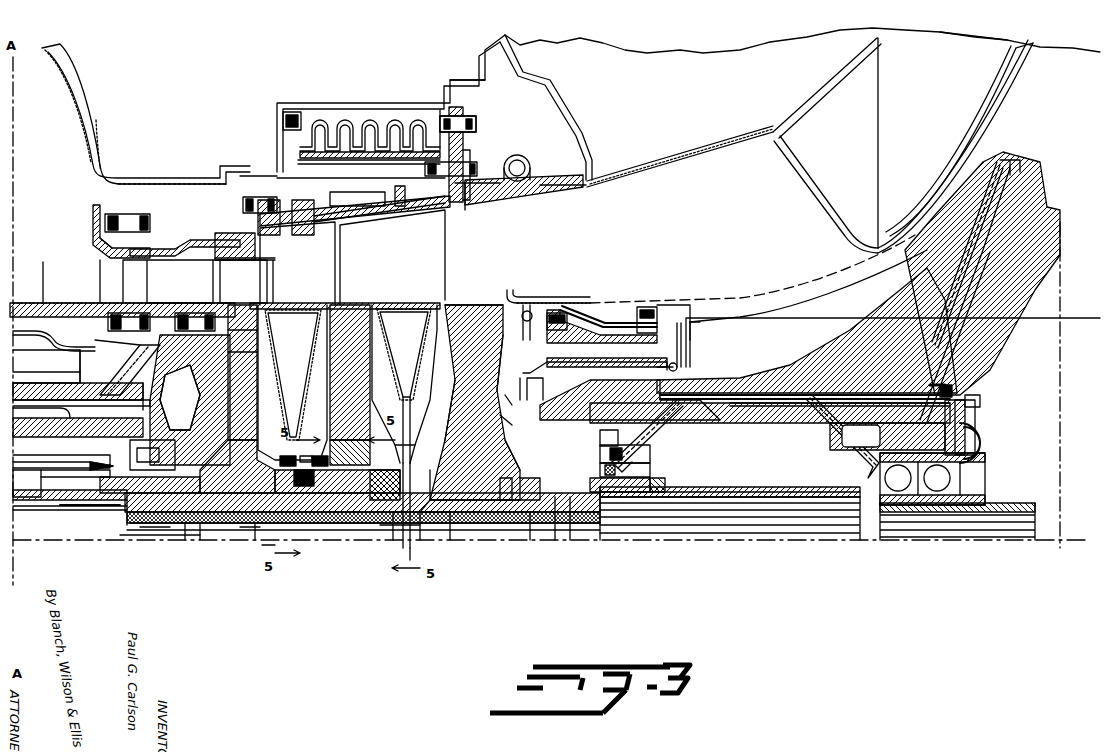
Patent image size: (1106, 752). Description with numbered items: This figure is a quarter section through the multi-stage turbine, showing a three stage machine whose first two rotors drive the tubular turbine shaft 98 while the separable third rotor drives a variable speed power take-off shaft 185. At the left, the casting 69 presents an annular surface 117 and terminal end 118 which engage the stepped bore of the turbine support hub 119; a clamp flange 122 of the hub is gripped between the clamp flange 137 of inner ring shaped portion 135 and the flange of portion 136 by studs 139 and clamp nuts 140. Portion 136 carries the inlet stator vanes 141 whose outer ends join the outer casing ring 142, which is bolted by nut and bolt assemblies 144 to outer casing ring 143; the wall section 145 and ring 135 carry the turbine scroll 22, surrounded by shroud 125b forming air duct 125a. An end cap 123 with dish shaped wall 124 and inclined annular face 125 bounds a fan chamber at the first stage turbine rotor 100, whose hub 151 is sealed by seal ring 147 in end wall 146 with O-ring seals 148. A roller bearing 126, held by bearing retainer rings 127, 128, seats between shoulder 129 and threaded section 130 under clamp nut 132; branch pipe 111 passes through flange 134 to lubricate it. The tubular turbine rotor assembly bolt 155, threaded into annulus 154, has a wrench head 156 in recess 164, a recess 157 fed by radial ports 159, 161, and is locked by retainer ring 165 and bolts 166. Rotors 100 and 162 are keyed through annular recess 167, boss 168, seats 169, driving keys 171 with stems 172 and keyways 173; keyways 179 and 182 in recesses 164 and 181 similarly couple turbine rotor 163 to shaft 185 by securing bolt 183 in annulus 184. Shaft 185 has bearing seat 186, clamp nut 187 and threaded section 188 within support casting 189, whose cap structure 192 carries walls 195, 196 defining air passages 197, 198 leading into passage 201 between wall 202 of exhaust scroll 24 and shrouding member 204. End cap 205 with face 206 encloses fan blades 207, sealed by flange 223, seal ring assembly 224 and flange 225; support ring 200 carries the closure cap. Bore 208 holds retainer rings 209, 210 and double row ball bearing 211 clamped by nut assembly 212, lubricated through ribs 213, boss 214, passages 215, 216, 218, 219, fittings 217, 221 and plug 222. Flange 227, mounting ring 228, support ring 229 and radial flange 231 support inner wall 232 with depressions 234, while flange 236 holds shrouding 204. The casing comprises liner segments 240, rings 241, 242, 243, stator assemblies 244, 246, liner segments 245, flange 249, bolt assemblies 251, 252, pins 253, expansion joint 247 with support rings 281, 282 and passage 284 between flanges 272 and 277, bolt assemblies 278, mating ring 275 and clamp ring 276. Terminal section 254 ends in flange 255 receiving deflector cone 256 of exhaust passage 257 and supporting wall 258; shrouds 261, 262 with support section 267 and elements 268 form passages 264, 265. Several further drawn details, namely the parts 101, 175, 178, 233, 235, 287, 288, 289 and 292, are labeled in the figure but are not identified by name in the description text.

The turbine scroll 22 is at (80, 100).
The exhaust scroll 24 is at (972, 45).
The casting 69 is at (28, 364).
The tubular turbine shaft 98 is at (70, 506).
The first stage turbine rotor 100 is at (243, 280).
The turbine casing 101 is at (1062, 215).
The branch pipe 111 is at (61, 483).
The annular surface 117 is at (80, 378).
The annular terminal end 118 is at (110, 401).
The turbine support hub 119 is at (90, 360).
The support and clamp flange 122 is at (620, 436).
The end cap 123 is at (224, 343).
The dish shaped wall 124 is at (220, 365).
The inclined annular face 125 is at (228, 418).
The air duct 125a is at (30, 300).
The shroud 125b is at (36, 325).
The roller bearing 126 is at (145, 442).
The bearing retainer ring 127 is at (180, 412).
The bearing retainer ring 128 is at (110, 454).
The shoulder 129 is at (150, 535).
The threaded section 130 is at (90, 517).
The clamp nut 132 is at (127, 516).
The radially inwardly directed flange 134 is at (78, 422).
The inner ring shaped portion 135 is at (108, 283).
The inner ring shaped portion 136 is at (190, 303).
The clamp flange 137 is at (115, 378).
The stud 139 is at (140, 356).
The clamp nut 140 is at (108, 325).
The inlet stator vane 141 is at (188, 287).
The outer casing ring 142 is at (172, 245).
The outer casing ring 143 is at (85, 246).
The nut and bolt assembly 144 is at (135, 220).
The wall section 145 is at (93, 205).
The end wall 146 is at (232, 448).
The seal ring 147 is at (222, 472).
The O-ring seal 148 is at (82, 397).
The hub 151 is at (245, 535).
The internally threaded annulus 154 is at (125, 535).
The tubular turbine rotor assembly bolt 155 is at (122, 560).
The wrench head 156 is at (420, 520).
The annular recess 157 is at (328, 545).
The radial port 159 is at (190, 540).
The radial port 161 is at (206, 540).
The turbine rotor 162 is at (347, 304).
The turbine rotor 163 is at (470, 305).
The recess 164 is at (450, 450).
The locking retainer ring 165 is at (450, 490).
The bolt 166 is at (440, 526).
The annular recess 167 is at (270, 539).
The annular boss 168 is at (532, 535).
The key receiving seat 169 is at (427, 558).
The driving key 171 is at (556, 522).
The stem 172 is at (347, 470).
The keyway 173 is at (296, 470).
The rotor seal 175 is at (523, 491).
The gasket 178 is at (332, 465).
The keyway 179 is at (340, 456).
The recess 181 is at (448, 502).
The keyway 182 is at (440, 470).
The securing bolt 183 is at (510, 550).
The internally threaded annulus 184 is at (400, 534).
The variable speed power take-off shaft 185 is at (760, 505).
The bearing seat 186 is at (640, 510).
The clamp nut 187 is at (650, 481).
The externally threaded section 188 is at (690, 510).
The support casting 189 is at (780, 370).
The cap structure 192 is at (590, 390).
The annular ring like wall 195 is at (638, 330).
The annular ring like wall 196 is at (598, 337).
The annular air passage 197 is at (625, 412).
The annular air passage 198 is at (787, 404).
The support ring 200 is at (425, 350).
The passage 201 is at (820, 292).
The wall 202 is at (705, 310).
The shrouding member 204 is at (1045, 95).
The end cap 205 is at (522, 395).
The inclined annular face 206 is at (505, 420).
The fan blade 207 is at (500, 442).
The annular bore 208 is at (860, 470).
The bearing retainer ring 209 is at (958, 395).
The retainer ring 210 is at (985, 405).
The double row ball bearing 211 is at (918, 525).
The clamp nut and lock nut assembly 212 is at (990, 490).
The internal rib 213 is at (990, 310).
The external boss 214 is at (950, 265).
The lubricant passage 215 is at (995, 252).
The lubricant passage 216 is at (720, 421).
The lubricant fitting 217 is at (672, 420).
The passage 218 is at (750, 422).
The cross passage 219 is at (887, 426).
The U-shaped lubricant fitting 221 is at (995, 440).
The plug 222 is at (955, 385).
The flange 223 is at (560, 300).
The seal ring assembly 224 is at (524, 300).
The annular flange 225 is at (507, 365).
The annular flange 227 is at (662, 300).
The mounting ring 228 is at (649, 294).
The sheet metal support ring 229 is at (600, 325).
The radial flange 231 is at (545, 310).
The inner wall 232 is at (906, 215).
The outer cowl 233 is at (556, 40).
The depression 234 is at (828, 205).
The exhaust liner 235 is at (976, 170).
The axially extending flange 236 is at (760, 300).
The liner ring segment 240 is at (215, 262).
The outer casing ring 241 is at (300, 252).
The outer casing ring 242 is at (355, 205).
The outer casing ring 243 is at (472, 172).
The stator blade assembly 244 is at (257, 287).
The liner segment 245 is at (348, 236).
The stator blade assembly 246 is at (386, 234).
The expansion joint 247 is at (490, 212).
The radial flange 249 is at (243, 238).
The bolt and nut assembly 251 is at (243, 208).
The bolt and nut assembly 252 is at (290, 196).
The positioning pin 253 is at (398, 190).
The terminal turbine casing section 254 is at (508, 146).
The support flange 255 is at (548, 184).
The deflector cone 256 is at (668, 156).
The exhaust passage 257 is at (798, 118).
The wall 258 is at (570, 106).
The shrouding member 261 is at (240, 176).
The shrouding member 262 is at (410, 78).
The air circulation passage 264 is at (180, 183).
The air circulation passage 265 is at (529, 109).
The support section 267 is at (369, 156).
The sheet metal support element 268 is at (369, 156).
The radial flange 272 is at (405, 150).
The mating ring section 275 is at (543, 196).
The C-shaped clamp ring 276 is at (526, 166).
The radial flange 277 is at (462, 108).
The bolt and nut assembly 278 is at (464, 152).
The annular support ring 281 is at (422, 220).
The annular support ring 282 is at (444, 119).
The annular passage 284 is at (464, 212).
The passage 287 is at (363, 493).
The blade shroud 288 is at (510, 400).
The bellows 289 is at (358, 118).
The wall 292 is at (443, 116).